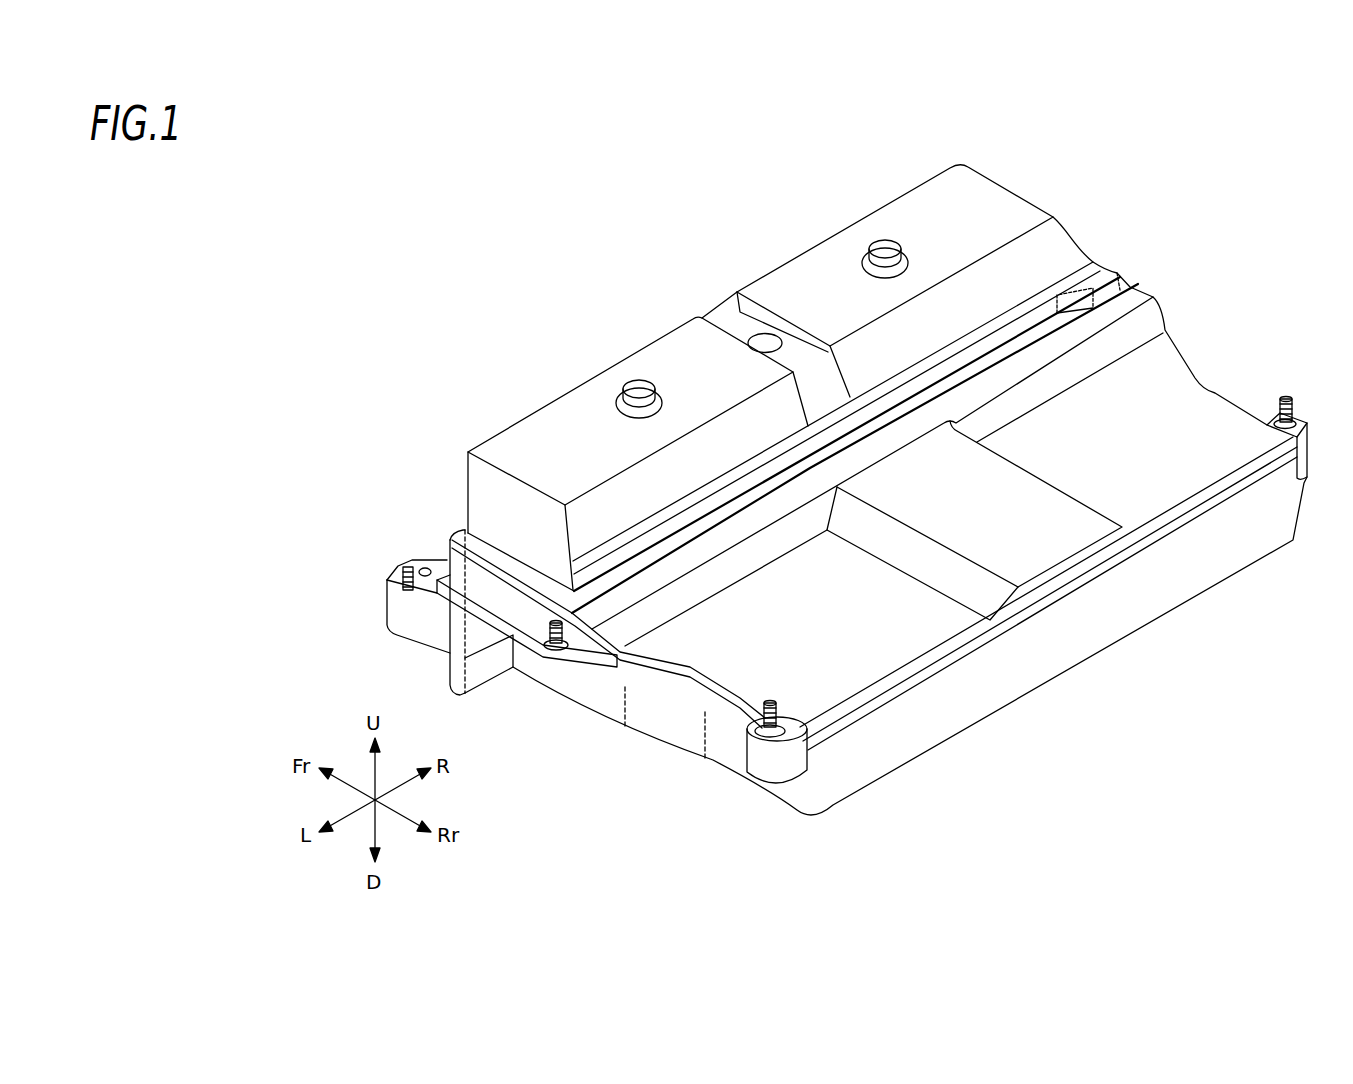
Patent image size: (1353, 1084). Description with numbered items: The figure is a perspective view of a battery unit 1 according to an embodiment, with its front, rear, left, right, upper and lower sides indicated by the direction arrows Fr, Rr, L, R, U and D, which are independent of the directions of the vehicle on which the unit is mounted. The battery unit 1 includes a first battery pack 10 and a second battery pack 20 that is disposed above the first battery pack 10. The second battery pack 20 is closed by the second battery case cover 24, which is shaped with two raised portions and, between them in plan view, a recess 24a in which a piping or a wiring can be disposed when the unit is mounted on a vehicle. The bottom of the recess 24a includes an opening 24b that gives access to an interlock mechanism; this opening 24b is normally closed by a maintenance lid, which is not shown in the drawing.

The battery unit 1 is at (565, 236).
The first battery pack 10 is at (1236, 350).
The second battery pack 20 is at (1078, 164).
The second battery case cover 24 is at (932, 192).
The recess 24a is at (725, 320).
The opening 24b is at (768, 340).